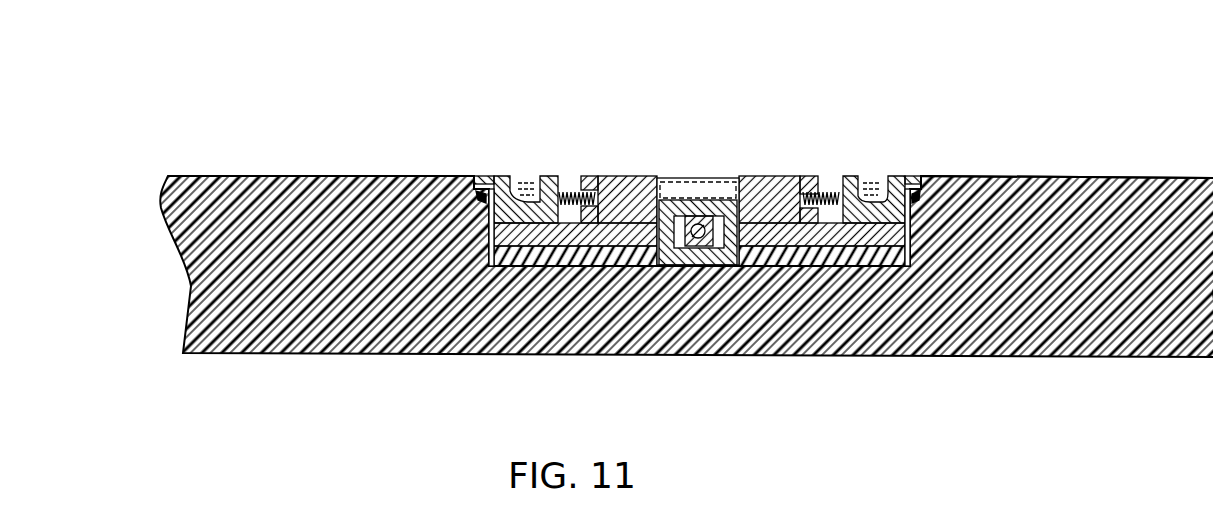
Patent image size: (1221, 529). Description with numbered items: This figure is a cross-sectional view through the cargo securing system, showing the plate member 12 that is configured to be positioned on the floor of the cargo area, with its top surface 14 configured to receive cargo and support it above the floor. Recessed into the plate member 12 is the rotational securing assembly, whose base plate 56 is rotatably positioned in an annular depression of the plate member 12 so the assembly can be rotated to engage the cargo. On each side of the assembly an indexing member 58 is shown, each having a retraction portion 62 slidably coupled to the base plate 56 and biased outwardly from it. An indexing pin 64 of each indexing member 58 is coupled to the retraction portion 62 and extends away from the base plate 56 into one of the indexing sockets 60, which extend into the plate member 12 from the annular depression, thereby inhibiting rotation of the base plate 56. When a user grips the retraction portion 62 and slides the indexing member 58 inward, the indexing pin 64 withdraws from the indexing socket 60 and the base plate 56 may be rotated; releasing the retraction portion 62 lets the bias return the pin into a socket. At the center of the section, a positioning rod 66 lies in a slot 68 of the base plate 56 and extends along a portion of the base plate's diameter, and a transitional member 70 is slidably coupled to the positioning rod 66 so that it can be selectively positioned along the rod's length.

The plate member 12 is at (670, 157).
The top surface 14 is at (1132, 168).
The base plate 56 is at (755, 185).
The indexing member 58 is at (550, 186).
The indexing sockets 60 is at (487, 170).
The retraction portion 62 is at (513, 192).
The indexing pin 64 is at (473, 185).
The positioning rod 66 is at (648, 258).
The slot 68 is at (651, 172).
The transitional member 70 is at (690, 216).